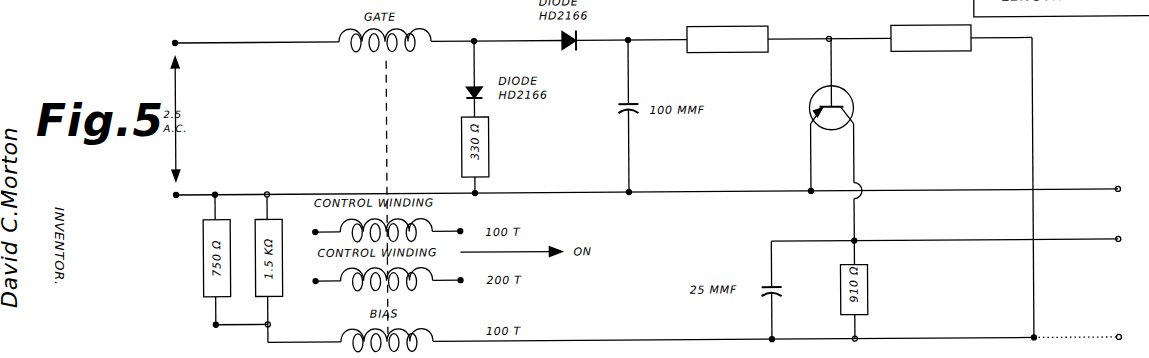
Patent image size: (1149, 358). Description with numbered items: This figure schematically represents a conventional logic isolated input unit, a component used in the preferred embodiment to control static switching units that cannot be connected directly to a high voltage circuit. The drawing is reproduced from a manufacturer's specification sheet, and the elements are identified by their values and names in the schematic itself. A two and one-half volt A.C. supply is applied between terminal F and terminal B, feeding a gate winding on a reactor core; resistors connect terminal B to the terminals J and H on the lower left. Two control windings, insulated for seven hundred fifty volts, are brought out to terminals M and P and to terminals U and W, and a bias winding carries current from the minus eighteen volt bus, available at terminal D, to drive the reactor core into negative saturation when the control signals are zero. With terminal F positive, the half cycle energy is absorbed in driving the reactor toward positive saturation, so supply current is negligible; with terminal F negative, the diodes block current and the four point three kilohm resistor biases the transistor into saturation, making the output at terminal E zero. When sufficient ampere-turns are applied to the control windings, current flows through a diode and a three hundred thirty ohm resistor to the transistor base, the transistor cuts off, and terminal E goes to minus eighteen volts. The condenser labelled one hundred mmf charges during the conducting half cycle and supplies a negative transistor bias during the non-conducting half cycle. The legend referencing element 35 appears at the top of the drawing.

The element 35 (transistor amplifier stage) 35 is at (860, 65).
The terminal F is at (247, 43).
The terminal B (common) B is at (639, 185).
The terminal J is at (233, 325).
The terminal H is at (274, 325).
The control winding terminal M is at (323, 224).
The control winding terminal P is at (449, 222).
The control winding terminal U is at (323, 273).
The control winding terminal W is at (451, 272).
The terminal E is at (987, 233).
The terminal D (-18 V) D is at (1078, 323).